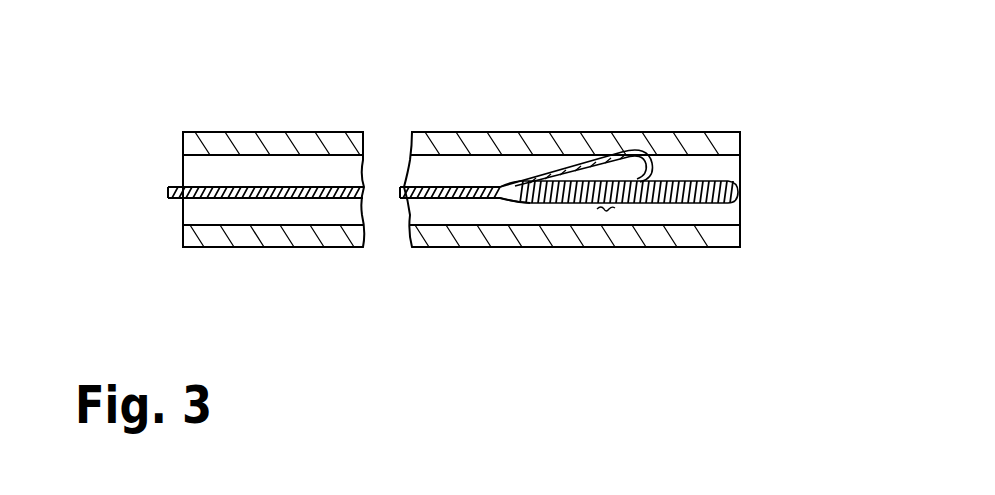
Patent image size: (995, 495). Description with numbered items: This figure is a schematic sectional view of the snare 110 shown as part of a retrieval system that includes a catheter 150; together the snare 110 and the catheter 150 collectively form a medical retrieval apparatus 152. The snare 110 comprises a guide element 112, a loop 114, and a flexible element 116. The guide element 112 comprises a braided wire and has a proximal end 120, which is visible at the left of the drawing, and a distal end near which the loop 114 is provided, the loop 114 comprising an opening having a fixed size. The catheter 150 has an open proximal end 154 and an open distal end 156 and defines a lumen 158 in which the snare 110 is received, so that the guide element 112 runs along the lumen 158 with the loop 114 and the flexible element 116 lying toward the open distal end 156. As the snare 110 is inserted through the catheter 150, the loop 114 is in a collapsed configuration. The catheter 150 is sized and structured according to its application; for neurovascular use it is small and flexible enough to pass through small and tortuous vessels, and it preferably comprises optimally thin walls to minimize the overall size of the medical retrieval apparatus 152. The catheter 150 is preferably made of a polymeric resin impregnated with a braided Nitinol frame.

The snare 110 is at (465, 201).
The guide element 112 is at (443, 185).
The loop 114 is at (568, 163).
The flexible element 116 is at (693, 182).
The proximal end 120 is at (175, 187).
The catheter 150 is at (673, 132).
The medical retrieval apparatus 152 is at (617, 131).
The open proximal end 154 is at (218, 132).
The open distal end 156 is at (739, 132).
The lumen 158 is at (609, 216).